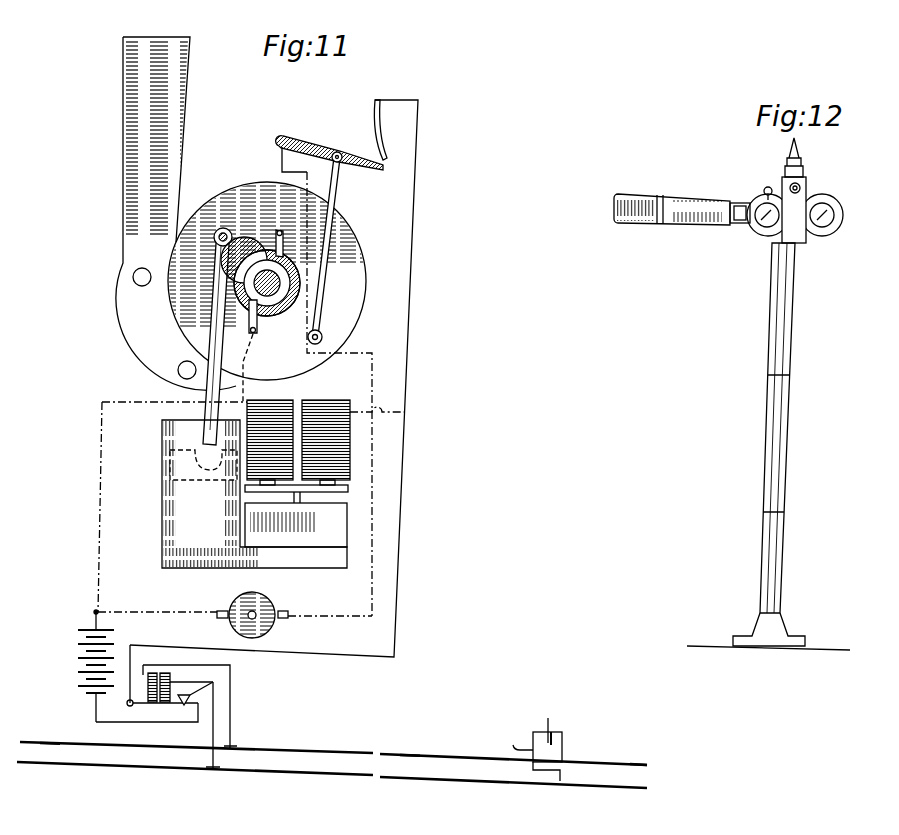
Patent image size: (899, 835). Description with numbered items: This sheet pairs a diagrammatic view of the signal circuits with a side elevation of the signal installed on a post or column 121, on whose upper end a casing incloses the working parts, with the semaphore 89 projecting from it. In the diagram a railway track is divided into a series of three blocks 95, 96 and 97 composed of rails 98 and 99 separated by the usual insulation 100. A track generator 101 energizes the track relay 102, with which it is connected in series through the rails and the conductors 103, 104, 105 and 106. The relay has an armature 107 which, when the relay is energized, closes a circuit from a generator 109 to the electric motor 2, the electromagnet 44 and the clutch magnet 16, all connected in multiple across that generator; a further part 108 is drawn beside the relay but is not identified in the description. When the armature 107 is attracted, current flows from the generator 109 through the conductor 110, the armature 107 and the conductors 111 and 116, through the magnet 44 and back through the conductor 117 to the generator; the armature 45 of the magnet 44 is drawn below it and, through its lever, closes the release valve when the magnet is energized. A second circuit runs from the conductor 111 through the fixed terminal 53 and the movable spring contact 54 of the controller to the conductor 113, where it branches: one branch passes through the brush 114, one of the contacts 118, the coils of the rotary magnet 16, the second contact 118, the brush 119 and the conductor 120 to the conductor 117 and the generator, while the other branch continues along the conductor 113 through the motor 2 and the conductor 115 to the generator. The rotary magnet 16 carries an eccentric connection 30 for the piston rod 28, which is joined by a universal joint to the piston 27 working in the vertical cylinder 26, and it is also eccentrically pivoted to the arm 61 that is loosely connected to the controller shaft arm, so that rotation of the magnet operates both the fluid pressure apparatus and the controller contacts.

In FIG. 11, the electric motor 2 is at (263, 609).
In FIG. 11, the rotary magnet 16 is at (268, 281).
In FIG. 11, the vertical cylinder 26 is at (172, 518).
In FIG. 11, the piston 27 is at (170, 470).
In FIG. 11, the piston rod 28 is at (207, 394).
In FIG. 11, the eccentric connection 30 is at (219, 230).
In FIG. 11, the electromagnet 44 is at (302, 400).
In FIG. 11, the armature 45 is at (300, 488).
In FIG. 11, the fixed terminals 53 is at (376, 140).
In FIG. 11, the spring contacts 54 is at (352, 163).
In FIG. 11, the arm 61 is at (335, 198).
In FIG. 11, the semaphore 89 is at (130, 151).
In FIG. 12, the semaphore 89 is at (700, 228).
In FIG. 11, the track block 95 is at (83, 754).
In FIG. 11, the track block 96 is at (429, 767).
In FIG. 11, the track block 97 is at (635, 774).
In FIG. 11, the rail 98 is at (42, 742).
In FIG. 11, the rail 99 is at (55, 762).
In FIG. 11, the insulation 100 is at (206, 747).
In FIG. 11, the track generator 101 is at (556, 726).
In FIG. 11, the track relay 102 is at (164, 676).
In FIG. 11, the conductor 103 is at (563, 744).
In FIG. 11, the conductor 104 is at (214, 708).
In FIG. 11, the conductor 105 is at (231, 728).
In FIG. 11, the conductor 106 is at (516, 741).
In FIG. 11, the armature 107 is at (170, 705).
In FIG. 11, the armature contact 108 is at (200, 687).
In FIG. 11, the generator 109 is at (80, 665).
In FIG. 11, the conductor 110 is at (96, 718).
In FIG. 11, the conductor 111 is at (408, 302).
In FIG. 11, the conductor 113 is at (282, 172).
In FIG. 11, the brush 114 is at (273, 235).
In FIG. 11, the conductor 115 is at (162, 610).
In FIG. 11, the conductor 116 is at (396, 412).
In FIG. 11, the conductor 117 is at (104, 442).
In FIG. 11, the contacts 118 is at (250, 258).
In FIG. 11, the brush 119 is at (250, 328).
In FIG. 11, the conductor 120 is at (259, 368).
In FIG. 12, the post 121 is at (760, 535).